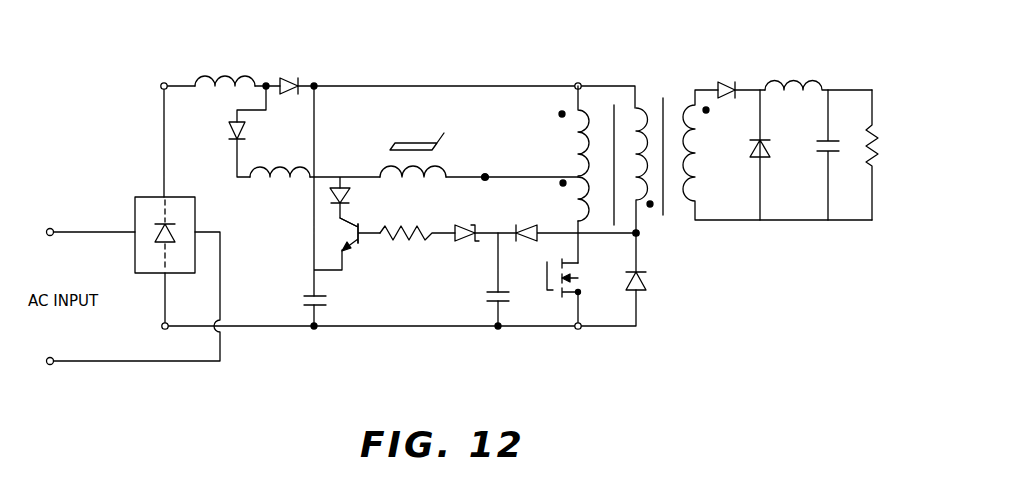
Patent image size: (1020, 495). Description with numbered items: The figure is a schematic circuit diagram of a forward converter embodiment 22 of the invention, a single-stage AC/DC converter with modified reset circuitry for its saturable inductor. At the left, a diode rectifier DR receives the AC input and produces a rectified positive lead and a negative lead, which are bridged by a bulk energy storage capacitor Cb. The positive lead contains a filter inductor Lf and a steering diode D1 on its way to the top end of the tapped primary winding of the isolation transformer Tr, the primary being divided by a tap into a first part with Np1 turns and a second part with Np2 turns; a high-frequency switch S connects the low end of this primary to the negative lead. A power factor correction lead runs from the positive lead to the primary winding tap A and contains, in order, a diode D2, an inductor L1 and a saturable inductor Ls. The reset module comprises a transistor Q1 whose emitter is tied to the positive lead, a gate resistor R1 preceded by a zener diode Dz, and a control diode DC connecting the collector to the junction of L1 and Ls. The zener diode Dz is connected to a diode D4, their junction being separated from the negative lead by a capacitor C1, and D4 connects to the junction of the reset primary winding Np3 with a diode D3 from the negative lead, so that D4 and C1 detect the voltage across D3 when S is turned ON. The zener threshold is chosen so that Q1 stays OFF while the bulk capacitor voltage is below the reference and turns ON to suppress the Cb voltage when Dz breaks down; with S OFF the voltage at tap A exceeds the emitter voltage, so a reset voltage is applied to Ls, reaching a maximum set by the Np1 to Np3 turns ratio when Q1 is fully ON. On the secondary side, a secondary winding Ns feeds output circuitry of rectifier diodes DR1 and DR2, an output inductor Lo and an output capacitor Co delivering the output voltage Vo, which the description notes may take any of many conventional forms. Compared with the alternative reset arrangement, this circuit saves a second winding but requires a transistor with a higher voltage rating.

The forward converter embodiment 22 is at (148, 88).
The filter inductor Lf is at (225, 66).
The steering diode D1 is at (302, 52).
The diode D2 is at (216, 134).
The inductor L1 is at (280, 159).
The diode rectifier DR is at (162, 224).
The bulk capacitor Cb is at (296, 304).
The saturable inductor Ls is at (413, 145).
The primary winding tap A is at (485, 176).
The control diode DC is at (352, 201).
The transistor Q1 is at (353, 245).
The gate resistor R1 is at (417, 246).
The zener diode Dz is at (460, 244).
The diode D4 is at (540, 238).
The capacitor C1 is at (484, 304).
The high-frequency switch S is at (571, 278).
The diode D3 is at (650, 286).
The isolation transformer Tr is at (640, 146).
The first primary winding part Np1 is at (561, 131).
The second primary winding part Np2 is at (556, 199).
The reset primary winding Np3 is at (655, 176).
The secondary winding Ns is at (777, 155).
The rectifier diode DR1 is at (735, 75).
The rectifier diode DR2 is at (774, 155).
The output inductor Lo is at (818, 71).
The output capacitor Co is at (817, 155).
The output voltage / load Vo is at (883, 155).